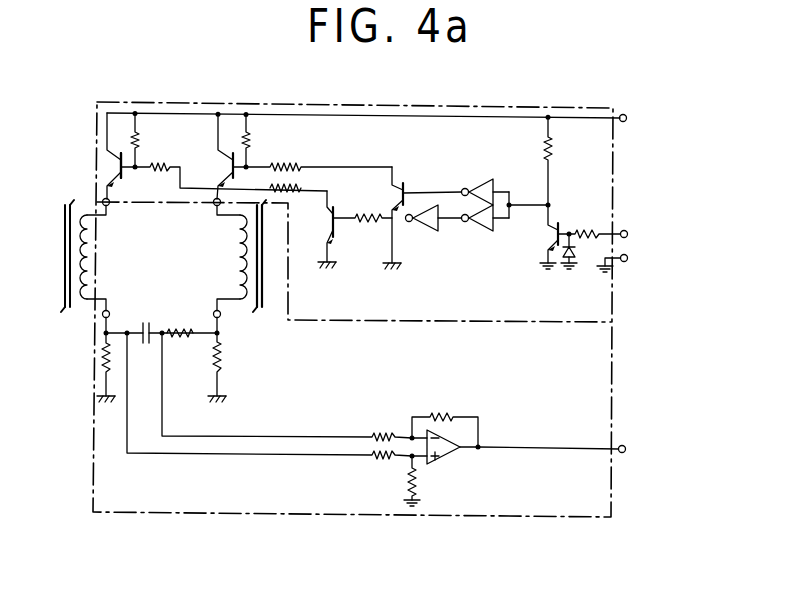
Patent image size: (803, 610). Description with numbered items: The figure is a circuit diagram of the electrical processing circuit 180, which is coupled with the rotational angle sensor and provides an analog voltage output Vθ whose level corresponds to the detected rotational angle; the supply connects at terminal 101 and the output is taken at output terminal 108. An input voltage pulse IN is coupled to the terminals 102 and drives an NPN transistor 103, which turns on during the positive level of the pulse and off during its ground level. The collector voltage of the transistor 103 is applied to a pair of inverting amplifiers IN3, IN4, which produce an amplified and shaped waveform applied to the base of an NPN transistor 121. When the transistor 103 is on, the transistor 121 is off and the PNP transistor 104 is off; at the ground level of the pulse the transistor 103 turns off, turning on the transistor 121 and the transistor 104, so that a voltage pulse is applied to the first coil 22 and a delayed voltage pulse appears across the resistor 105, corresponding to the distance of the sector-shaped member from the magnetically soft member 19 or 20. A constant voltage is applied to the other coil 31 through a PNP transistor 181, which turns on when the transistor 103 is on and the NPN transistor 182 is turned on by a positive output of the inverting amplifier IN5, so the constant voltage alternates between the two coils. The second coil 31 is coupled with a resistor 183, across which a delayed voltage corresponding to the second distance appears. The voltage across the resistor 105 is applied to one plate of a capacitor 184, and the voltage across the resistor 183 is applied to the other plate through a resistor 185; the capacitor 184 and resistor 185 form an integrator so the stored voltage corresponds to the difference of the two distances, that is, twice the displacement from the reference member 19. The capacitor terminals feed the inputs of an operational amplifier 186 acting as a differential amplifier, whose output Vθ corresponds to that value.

The electrical processing circuit 180 is at (122, 102).
The PNP transistor 181 is at (211, 159).
The NPN transistor 182 is at (402, 180).
The resistor 183 is at (222, 362).
The capacitor 184 is at (144, 346).
The resistor 185 is at (184, 340).
The operational amplifier 186 is at (445, 460).
The PNP transistor 104 is at (130, 180).
The resistor 105 is at (100, 356).
The magnetically soft member 19 is at (64, 206).
The magnetically soft member 20 is at (263, 285).
The coil 22 is at (88, 254).
The coil 31 is at (238, 260).
The terminal 101 is at (623, 114).
The terminals 102 is at (625, 230).
The NPN transistor 103 is at (538, 248).
The output terminal 108 is at (625, 446).
The NPN transistor 121 is at (339, 247).
The inverting amplifier IN3 is at (485, 234).
The inverting amplifier IN4 is at (430, 234).
The inverting amplifier IN5 is at (483, 180).